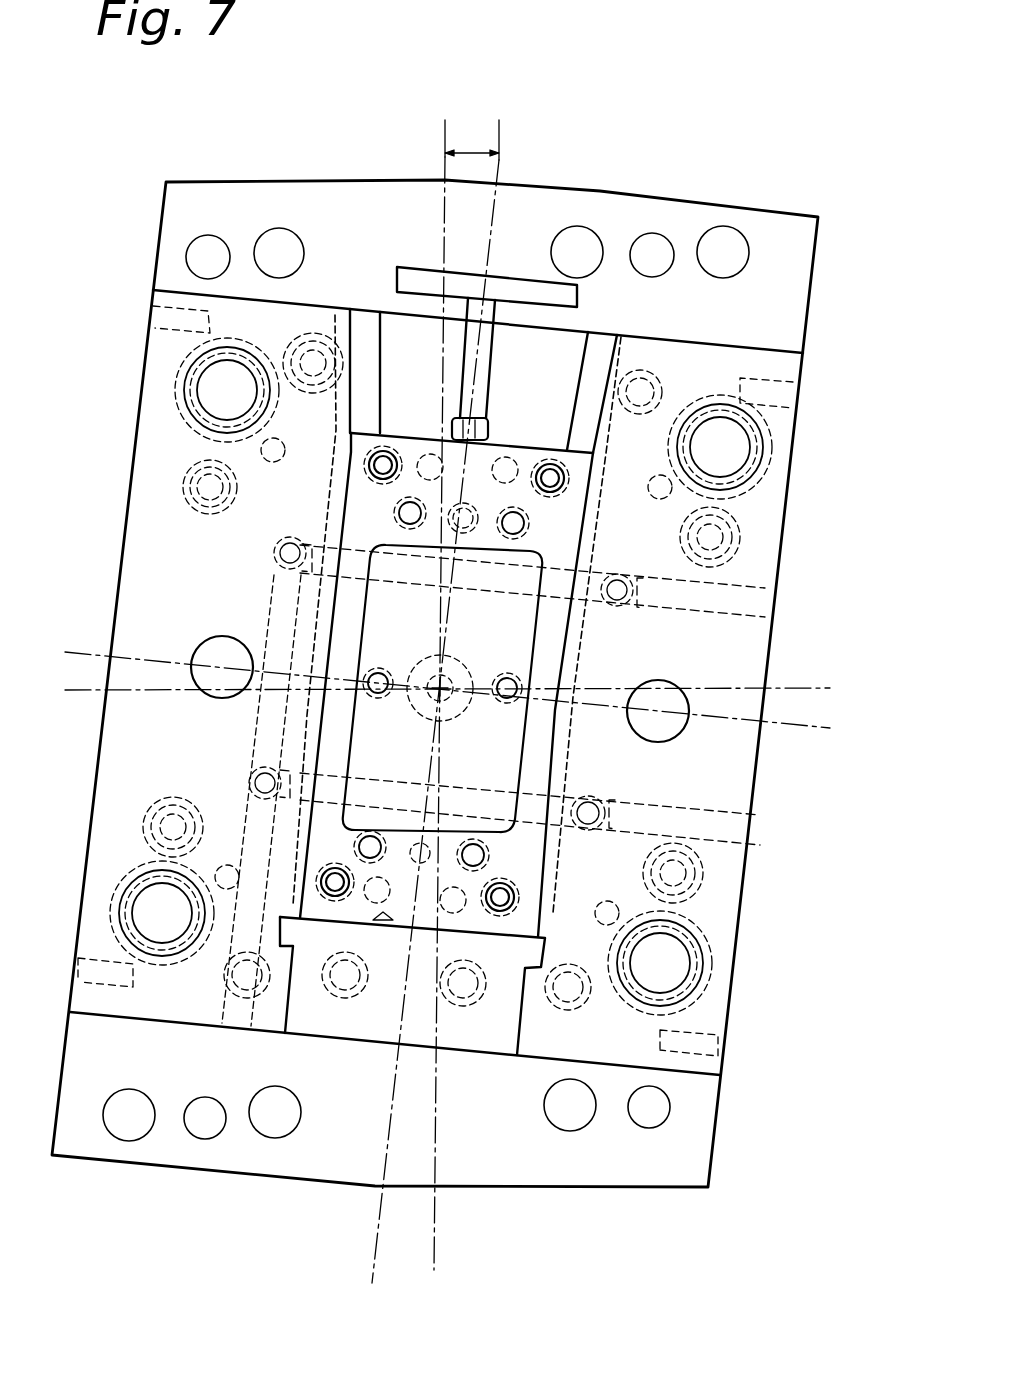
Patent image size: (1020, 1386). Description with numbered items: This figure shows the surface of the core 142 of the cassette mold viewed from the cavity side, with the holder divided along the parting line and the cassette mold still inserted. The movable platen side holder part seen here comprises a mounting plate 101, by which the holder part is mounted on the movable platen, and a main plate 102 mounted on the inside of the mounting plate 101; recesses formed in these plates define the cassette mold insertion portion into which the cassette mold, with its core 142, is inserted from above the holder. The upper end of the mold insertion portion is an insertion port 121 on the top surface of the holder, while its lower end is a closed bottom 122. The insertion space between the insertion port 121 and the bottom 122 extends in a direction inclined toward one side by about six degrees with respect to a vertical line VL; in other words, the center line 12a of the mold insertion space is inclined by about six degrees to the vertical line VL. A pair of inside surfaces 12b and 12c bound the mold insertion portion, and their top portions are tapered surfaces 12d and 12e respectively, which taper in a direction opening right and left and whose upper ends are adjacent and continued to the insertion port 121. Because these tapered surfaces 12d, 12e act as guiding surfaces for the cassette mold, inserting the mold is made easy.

The mounting plate 101 is at (591, 206).
The main plate of the movable platen side holder part 102 is at (700, 360).
The insertion port 121 is at (390, 309).
The bottom 122 is at (388, 935).
The core 142 is at (420, 428).
The center line 12a is at (374, 1228).
The inside surface 12b is at (555, 745).
The inside surface 12c is at (326, 741).
The tapered surface 12d is at (603, 388).
The tapered surface 12e is at (351, 368).
The vertical line VL is at (440, 1212).